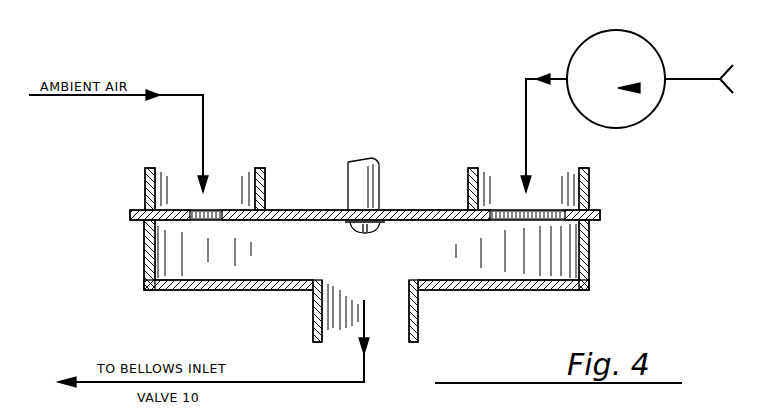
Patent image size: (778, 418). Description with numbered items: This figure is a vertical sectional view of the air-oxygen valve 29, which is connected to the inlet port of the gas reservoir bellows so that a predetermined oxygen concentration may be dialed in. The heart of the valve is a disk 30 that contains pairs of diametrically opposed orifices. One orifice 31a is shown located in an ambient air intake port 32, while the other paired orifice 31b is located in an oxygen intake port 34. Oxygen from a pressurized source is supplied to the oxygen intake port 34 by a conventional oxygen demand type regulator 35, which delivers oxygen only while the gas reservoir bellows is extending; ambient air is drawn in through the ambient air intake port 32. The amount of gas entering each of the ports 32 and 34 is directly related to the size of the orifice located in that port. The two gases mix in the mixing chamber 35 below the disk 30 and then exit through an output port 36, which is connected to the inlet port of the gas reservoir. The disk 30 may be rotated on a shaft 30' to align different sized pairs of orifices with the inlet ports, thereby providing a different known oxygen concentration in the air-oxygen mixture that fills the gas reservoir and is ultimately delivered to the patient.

The air-oxygen valve 29 is at (226, 296).
The disk 30 is at (365, 195).
The shaft 30' is at (339, 192).
The orifice 31a is at (200, 222).
The paired orifice 31b is at (536, 224).
The ambient air intake port 32 is at (252, 190).
The oxygen intake port 34 is at (582, 180).
The oxygen demand type regulator 35 is at (650, 114).
The output port 36 is at (412, 322).